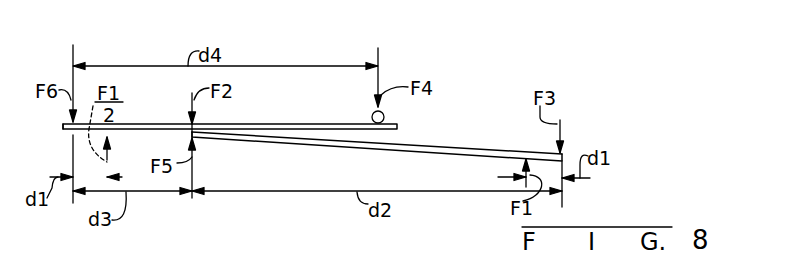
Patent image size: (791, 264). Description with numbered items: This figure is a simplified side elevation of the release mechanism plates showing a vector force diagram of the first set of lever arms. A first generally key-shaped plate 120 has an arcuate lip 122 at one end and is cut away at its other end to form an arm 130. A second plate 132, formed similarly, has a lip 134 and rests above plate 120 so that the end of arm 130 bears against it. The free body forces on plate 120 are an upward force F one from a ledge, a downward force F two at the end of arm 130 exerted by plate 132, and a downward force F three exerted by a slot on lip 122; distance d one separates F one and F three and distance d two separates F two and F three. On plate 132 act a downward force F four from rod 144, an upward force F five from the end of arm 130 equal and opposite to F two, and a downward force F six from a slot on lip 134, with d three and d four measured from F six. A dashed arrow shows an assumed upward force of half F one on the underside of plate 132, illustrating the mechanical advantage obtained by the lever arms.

The first key-shaped plate 120 is at (463, 147).
The arcuate lip 122 is at (563, 157).
The arm 130 is at (233, 140).
The second plate 132 is at (309, 123).
The lip 134 is at (63, 128).
The rod 144 is at (384, 116).